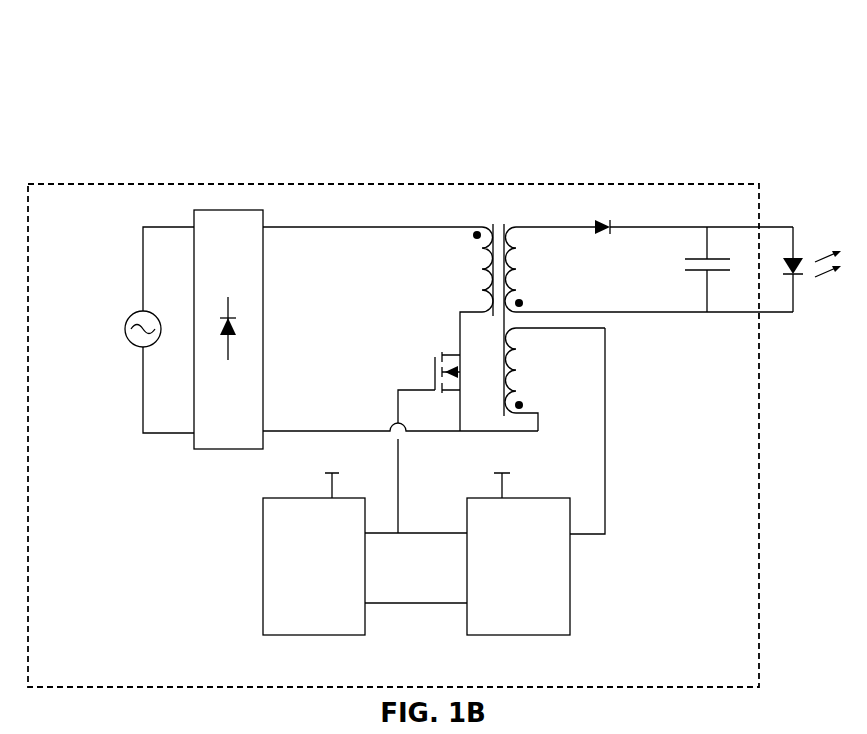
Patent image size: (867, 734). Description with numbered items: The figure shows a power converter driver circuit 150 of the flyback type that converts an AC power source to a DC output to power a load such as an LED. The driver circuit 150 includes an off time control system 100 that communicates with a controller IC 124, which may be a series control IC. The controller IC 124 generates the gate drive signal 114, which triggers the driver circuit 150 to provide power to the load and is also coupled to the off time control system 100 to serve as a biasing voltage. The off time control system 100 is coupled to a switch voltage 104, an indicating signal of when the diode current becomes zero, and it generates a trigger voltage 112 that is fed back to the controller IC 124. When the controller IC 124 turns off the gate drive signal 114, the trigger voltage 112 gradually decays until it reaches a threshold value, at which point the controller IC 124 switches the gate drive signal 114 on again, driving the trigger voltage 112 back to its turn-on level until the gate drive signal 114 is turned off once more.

The power converter driver circuit 150 is at (764, 89).
The controller IC 124 is at (265, 603).
The off time control system 100 is at (558, 610).
The gate drive signal GD 114 is at (418, 496).
The trigger voltage ZCD 112 is at (413, 630).
The switch voltage VSW 104 is at (653, 500).